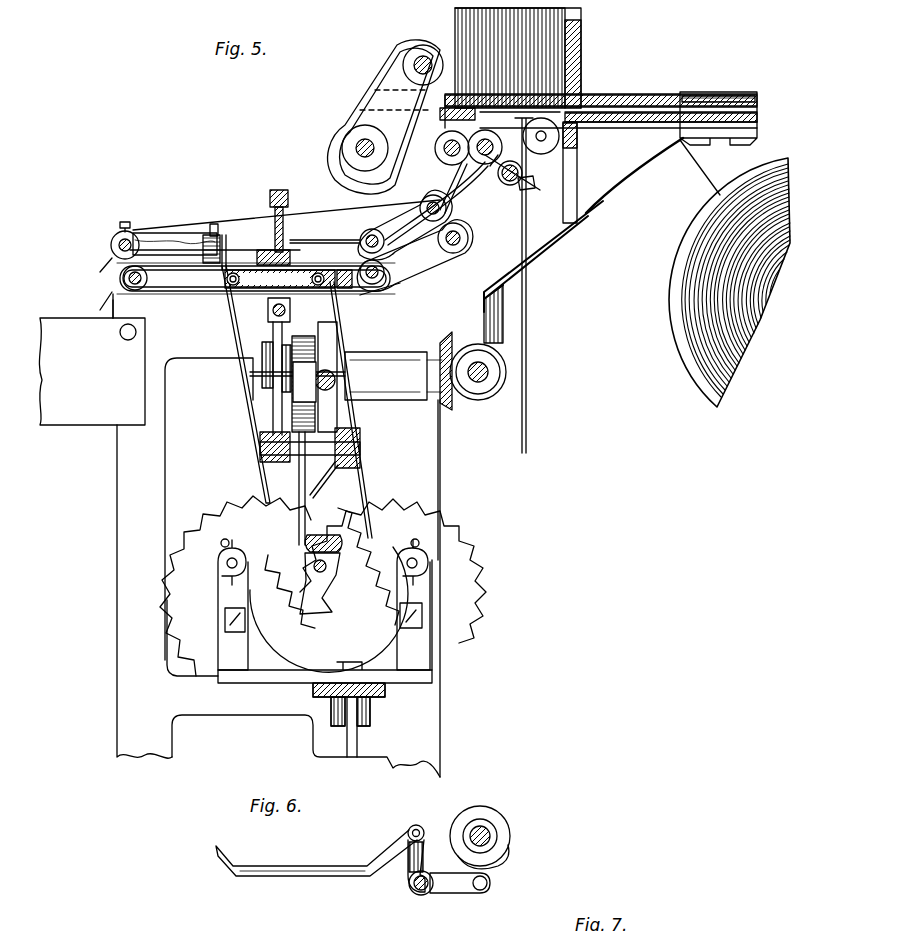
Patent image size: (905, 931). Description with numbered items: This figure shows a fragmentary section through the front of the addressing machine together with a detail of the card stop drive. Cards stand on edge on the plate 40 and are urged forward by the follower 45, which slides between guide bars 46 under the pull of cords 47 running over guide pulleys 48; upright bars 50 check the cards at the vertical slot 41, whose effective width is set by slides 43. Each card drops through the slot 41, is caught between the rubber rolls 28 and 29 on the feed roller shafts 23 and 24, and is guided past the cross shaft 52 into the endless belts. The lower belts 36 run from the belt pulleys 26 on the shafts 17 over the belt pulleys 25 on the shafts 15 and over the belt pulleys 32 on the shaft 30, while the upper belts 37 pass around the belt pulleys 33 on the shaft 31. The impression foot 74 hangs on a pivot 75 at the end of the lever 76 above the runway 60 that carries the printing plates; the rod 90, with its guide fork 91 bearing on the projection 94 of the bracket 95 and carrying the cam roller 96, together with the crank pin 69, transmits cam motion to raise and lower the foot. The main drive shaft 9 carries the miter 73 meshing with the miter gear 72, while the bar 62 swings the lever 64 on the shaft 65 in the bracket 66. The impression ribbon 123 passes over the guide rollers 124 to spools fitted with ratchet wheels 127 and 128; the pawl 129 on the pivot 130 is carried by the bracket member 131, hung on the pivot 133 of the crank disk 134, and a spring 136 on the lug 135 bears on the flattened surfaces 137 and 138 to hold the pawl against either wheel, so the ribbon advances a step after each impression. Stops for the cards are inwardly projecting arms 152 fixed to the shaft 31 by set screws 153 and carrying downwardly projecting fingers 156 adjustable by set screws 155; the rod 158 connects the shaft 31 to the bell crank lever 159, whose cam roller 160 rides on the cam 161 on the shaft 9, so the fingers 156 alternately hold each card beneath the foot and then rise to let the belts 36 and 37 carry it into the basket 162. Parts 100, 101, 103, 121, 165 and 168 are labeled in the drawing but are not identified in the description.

In FIG. 5, the main drive shaft 9 is at (485, 372).
In FIG. 6, the main drive shaft 9 is at (490, 828).
In FIG. 5, the feed roller shafts 15 is at (362, 240).
In FIG. 5, the feed roller shafts 17 is at (436, 200).
In FIG. 5, the feed roller shaft 23 is at (431, 187).
In FIG. 5, the feed roller shaft 24 is at (507, 185).
In FIG. 5, the belt pulleys 25 is at (376, 240).
In FIG. 5, the belt pulleys 26 is at (473, 188).
In FIG. 5, the roll 28 is at (440, 153).
In FIG. 5, the roll 29 is at (527, 140).
In FIG. 5, the shaft 30 is at (122, 280).
In FIG. 5, the shaft 31 is at (112, 245).
In FIG. 5, the belt pulleys 32 is at (112, 295).
In FIG. 5, the belt pulleys 33 is at (100, 260).
In FIG. 5, the lower belts 36 is at (440, 262).
In FIG. 5, the belts 37 is at (338, 187).
In FIG. 5, the plate 40 is at (583, 100).
In FIG. 5, the slot 41 is at (440, 145).
In FIG. 5, the slides 43 is at (385, 98).
In FIG. 5, the follower 45 is at (578, 92).
In FIG. 5, the guide bars 46 is at (735, 75).
In FIG. 5, the cords 47 is at (527, 290).
In FIG. 5, the guide pulleys 48 is at (582, 160).
In FIG. 5, the upright bars 50 is at (468, 36).
In FIG. 5, the cross shaft 52 is at (536, 186).
In FIG. 5, the runway 60 is at (298, 288).
In FIG. 5, the bar 62 is at (268, 312).
In FIG. 5, the lever 64 is at (300, 400).
In FIG. 5, the shaft 65 is at (300, 462).
In FIG. 5, the bracket 66 is at (265, 460).
In FIG. 5, the crank pin 69 is at (265, 345).
In FIG. 5, the miter gear 72 is at (460, 322).
In FIG. 5, the miter 73 is at (498, 383).
In FIG. 5, the impression foot 74 is at (285, 252).
In FIG. 5, the pivot 75 is at (305, 172).
In FIG. 5, the lever 76 is at (278, 190).
In FIG. 5, the rod 90 is at (340, 365).
In FIG. 5, the guide fork 91 is at (333, 372).
In FIG. 5, the projection 94 is at (305, 340).
In FIG. 5, the bracket 95 is at (410, 360).
In FIG. 5, the cam roller 96 is at (300, 420).
In FIG. 5, the pulley 100 is at (358, 148).
In FIG. 5, the belt portion 101 is at (378, 105).
In FIG. 5, the pulley 103 is at (418, 62).
In FIG. 5, the bar 121 is at (503, 322).
In FIG. 5, the impression ribbon 123 is at (244, 388).
In FIG. 5, the guide rollers 124 is at (222, 280).
In FIG. 5, the ratchet wheel 127 is at (185, 545).
In FIG. 5, the ratchet wheel 128 is at (460, 572).
In FIG. 5, the pawl 129 is at (325, 652).
In FIG. 5, the pivot 130 is at (330, 563).
In FIG. 5, the bracket member 131 is at (360, 462).
In FIG. 5, the pivot 133 is at (362, 440).
In FIG. 5, the crank disk 134 is at (336, 495).
In FIG. 5, the lug 135 is at (312, 535).
In FIG. 5, the spring 136 is at (372, 525).
In FIG. 5, the flattened surface 137 is at (305, 545).
In FIG. 5, the flattened surface 138 is at (342, 560).
In FIG. 5, the arms 152 is at (180, 235).
In FIG. 5, the set screws 153 is at (128, 212).
In FIG. 5, the set screws 155 is at (216, 226).
In FIG. 5, the fingers 156 is at (226, 258).
In FIG. 6, the rod 158 is at (312, 876).
In FIG. 6, the bell crank lever 159 is at (410, 862).
In FIG. 6, the cam roller 160 is at (495, 880).
In FIG. 6, the cam 161 is at (510, 842).
In FIG. 5, the basket 162 is at (145, 355).
In FIG. 5, the edge 165 is at (712, 170).
In FIG. 5, the fabric roll 168 is at (685, 268).